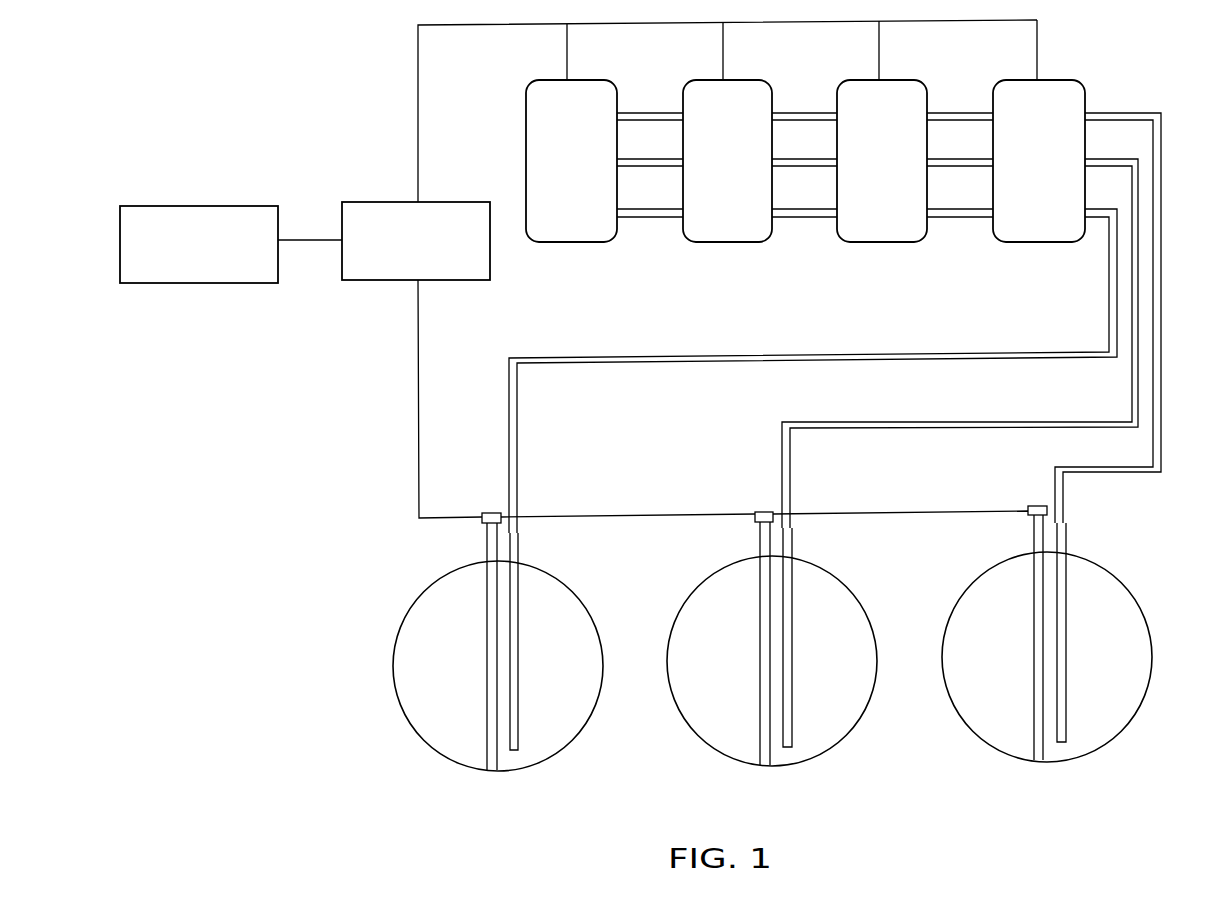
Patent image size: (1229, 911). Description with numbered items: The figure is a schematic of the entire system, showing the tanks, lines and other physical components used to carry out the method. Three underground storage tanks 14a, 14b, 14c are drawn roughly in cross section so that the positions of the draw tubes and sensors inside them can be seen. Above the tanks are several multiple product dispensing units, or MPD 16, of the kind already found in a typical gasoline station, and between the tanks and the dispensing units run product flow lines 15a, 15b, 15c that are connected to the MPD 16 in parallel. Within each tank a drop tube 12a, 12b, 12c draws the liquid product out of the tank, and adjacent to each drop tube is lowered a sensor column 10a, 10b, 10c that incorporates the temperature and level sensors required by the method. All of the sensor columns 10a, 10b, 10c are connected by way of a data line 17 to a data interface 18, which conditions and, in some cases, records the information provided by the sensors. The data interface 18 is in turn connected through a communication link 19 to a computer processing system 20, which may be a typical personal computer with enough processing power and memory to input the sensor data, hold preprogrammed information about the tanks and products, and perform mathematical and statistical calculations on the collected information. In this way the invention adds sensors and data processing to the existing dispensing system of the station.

The sensor column 10a is at (487, 633).
The sensor column 10b is at (760, 630).
The sensor column 10c is at (1034, 627).
The drop tube 12a is at (519, 745).
The drop tube 12b is at (792, 742).
The drop tube 12c is at (1066, 738).
The underground storage tank 14a is at (576, 590).
The underground storage tank 14b is at (850, 587).
The underground storage tank 14c is at (1147, 617).
The product flow line 15a is at (572, 364).
The product flow line 15b is at (860, 429).
The product flow line 15c is at (1122, 473).
The multiple product dispensing unit 16 is at (567, 243).
The data line 17 is at (419, 429).
The data interface 18 is at (402, 281).
The communication link 19 is at (314, 240).
The computer processing system 20 is at (197, 284).